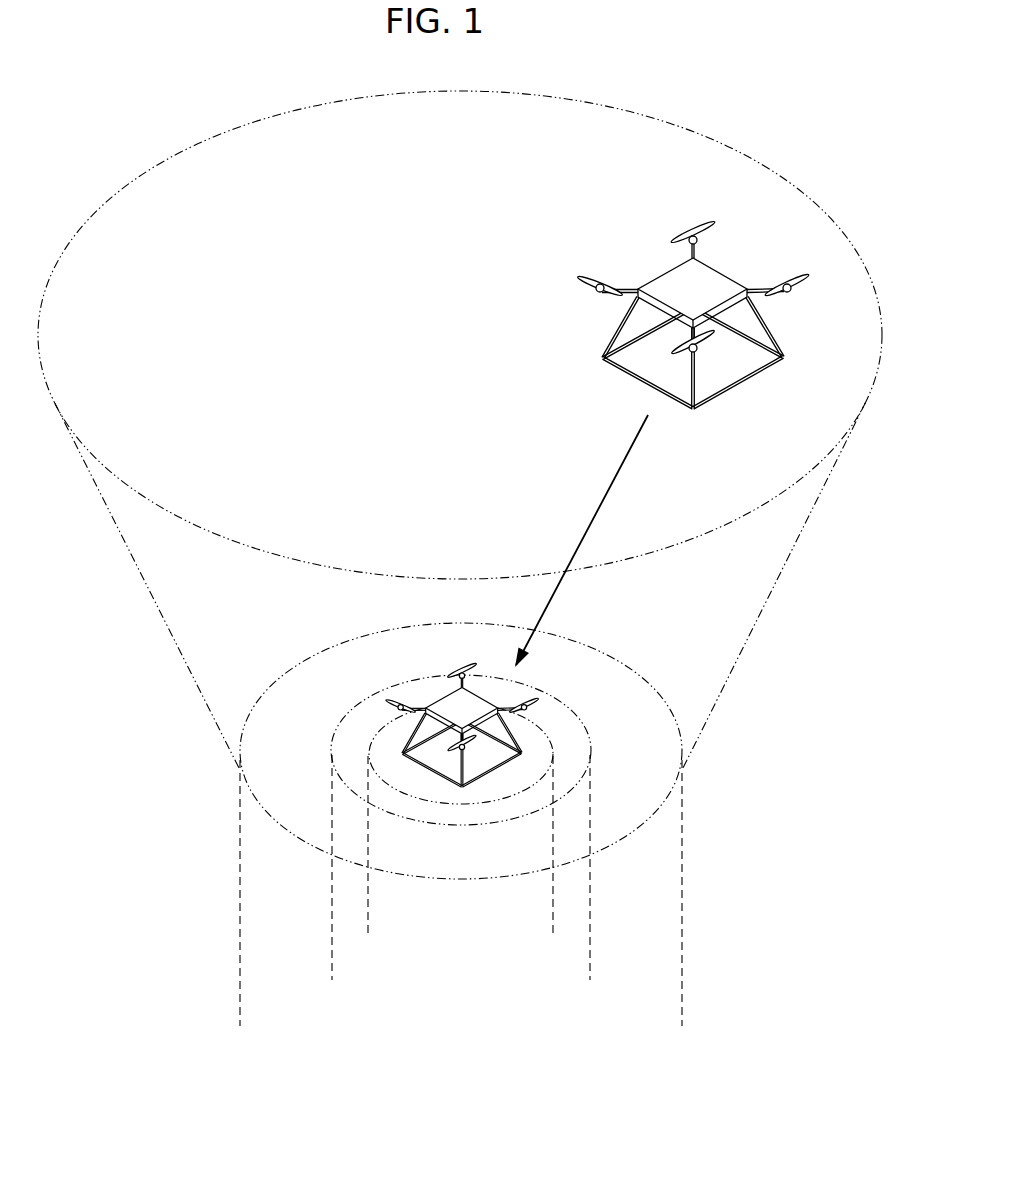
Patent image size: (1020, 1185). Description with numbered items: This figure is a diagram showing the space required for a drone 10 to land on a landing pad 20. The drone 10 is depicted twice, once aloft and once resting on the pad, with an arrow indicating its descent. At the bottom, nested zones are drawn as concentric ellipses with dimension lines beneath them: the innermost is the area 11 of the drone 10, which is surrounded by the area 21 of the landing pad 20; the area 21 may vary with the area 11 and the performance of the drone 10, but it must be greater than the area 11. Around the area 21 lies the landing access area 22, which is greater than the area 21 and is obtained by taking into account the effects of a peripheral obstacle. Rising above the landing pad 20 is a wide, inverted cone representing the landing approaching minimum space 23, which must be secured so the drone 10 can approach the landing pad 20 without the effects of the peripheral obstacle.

The drone 10 is at (623, 248).
The area of the drone 11 is at (553, 932).
The landing pad 20 is at (461, 824).
The area of the landing pad 21 is at (590, 977).
The landing access area 22 is at (682, 1021).
The landing approaching minimum space 23 is at (752, 632).